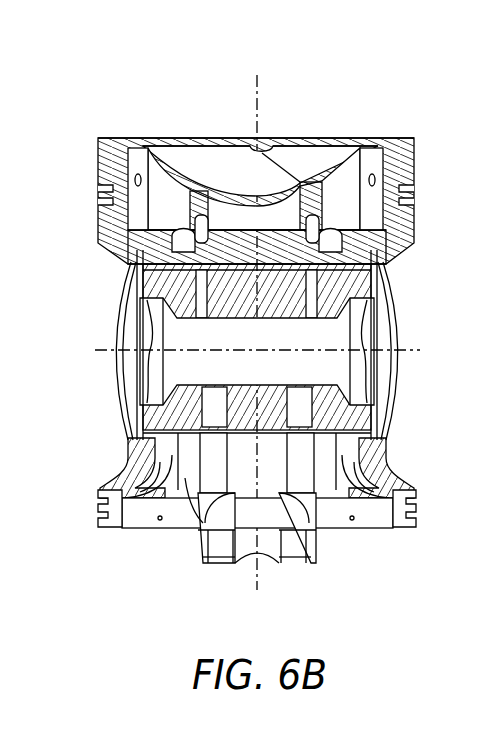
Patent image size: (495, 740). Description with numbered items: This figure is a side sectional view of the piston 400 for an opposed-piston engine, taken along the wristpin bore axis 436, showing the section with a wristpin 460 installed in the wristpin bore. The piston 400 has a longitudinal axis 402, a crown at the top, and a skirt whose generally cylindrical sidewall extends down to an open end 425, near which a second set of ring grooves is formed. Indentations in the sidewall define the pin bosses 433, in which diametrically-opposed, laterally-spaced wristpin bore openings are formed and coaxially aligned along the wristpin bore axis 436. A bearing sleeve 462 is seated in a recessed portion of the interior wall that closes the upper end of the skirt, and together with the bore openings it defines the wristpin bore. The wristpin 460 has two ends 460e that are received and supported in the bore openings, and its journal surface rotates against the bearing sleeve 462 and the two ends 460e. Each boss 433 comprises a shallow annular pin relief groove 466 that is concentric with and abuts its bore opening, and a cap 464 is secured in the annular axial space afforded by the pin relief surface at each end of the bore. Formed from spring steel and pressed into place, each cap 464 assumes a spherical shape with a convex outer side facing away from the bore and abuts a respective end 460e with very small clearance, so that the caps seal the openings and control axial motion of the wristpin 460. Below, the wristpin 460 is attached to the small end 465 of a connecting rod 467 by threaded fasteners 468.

The piston 400 is at (251, 335).
The longitudinal axis 402 is at (256, 95).
The open end 425 is at (368, 545).
The pin boss 433 is at (125, 452).
The wristpin bore axis 436 is at (112, 350).
The wristpin 460 is at (338, 283).
The wristpin end 460e is at (147, 290).
The bearing sleeve 462 is at (278, 270).
The cap 464 is at (125, 398).
The small end 465 is at (205, 515).
The pin relief groove 466 is at (132, 262).
The connecting rod 467 is at (227, 552).
The threaded fastener 468 is at (287, 552).